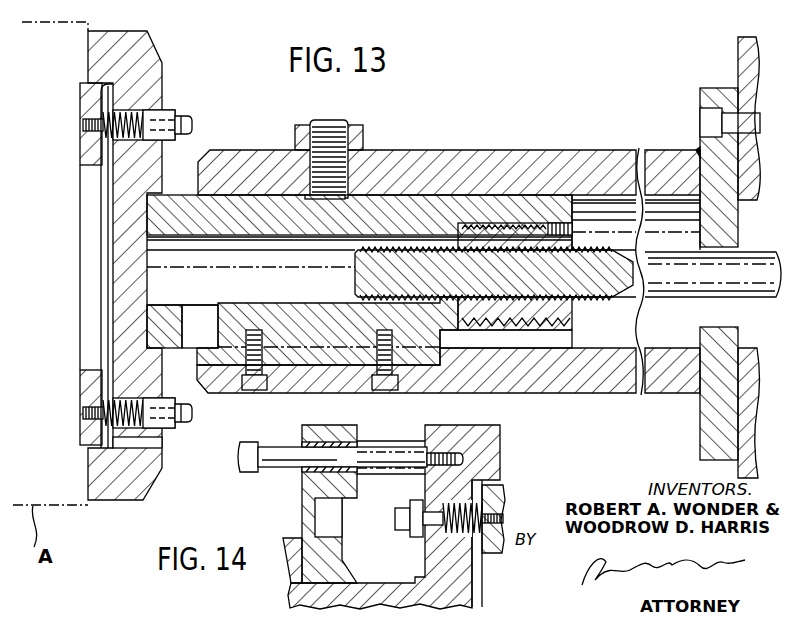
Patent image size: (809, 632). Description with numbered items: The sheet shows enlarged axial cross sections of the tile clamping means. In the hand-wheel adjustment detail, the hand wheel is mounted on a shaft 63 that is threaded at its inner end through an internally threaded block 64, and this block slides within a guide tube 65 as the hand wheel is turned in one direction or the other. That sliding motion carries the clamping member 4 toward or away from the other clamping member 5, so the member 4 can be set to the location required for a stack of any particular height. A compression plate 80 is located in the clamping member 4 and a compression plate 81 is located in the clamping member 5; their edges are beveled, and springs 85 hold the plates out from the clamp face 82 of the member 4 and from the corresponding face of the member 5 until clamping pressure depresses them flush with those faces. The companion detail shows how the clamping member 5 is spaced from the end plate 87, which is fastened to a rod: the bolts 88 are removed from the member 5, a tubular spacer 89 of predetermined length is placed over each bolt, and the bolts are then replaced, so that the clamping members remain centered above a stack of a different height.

In FIG. 13, the clamping member 4 is at (162, 51).
In FIG. 14, the clamping member 5 is at (501, 457).
In FIG. 13, the shaft 63 is at (665, 294).
In FIG. 13, the internally threaded block 64 is at (574, 314).
In FIG. 13, the guide tube 65 is at (487, 153).
In FIG. 13, the compression plate 80 is at (80, 147).
In FIG. 14, the compression plate 81 is at (506, 500).
In FIG. 13, the clamp face 82 is at (88, 55).
In FIG. 13, the springs 85 is at (110, 395).
In FIG. 14, the end plate 87 is at (302, 483).
In FIG. 14, the bolts 88 is at (287, 447).
In FIG. 14, the tubular spacer 89 is at (398, 441).